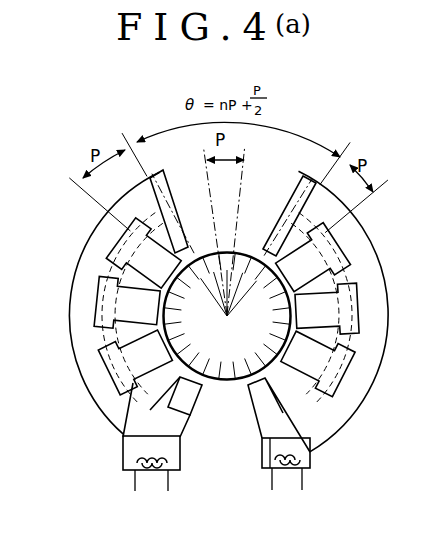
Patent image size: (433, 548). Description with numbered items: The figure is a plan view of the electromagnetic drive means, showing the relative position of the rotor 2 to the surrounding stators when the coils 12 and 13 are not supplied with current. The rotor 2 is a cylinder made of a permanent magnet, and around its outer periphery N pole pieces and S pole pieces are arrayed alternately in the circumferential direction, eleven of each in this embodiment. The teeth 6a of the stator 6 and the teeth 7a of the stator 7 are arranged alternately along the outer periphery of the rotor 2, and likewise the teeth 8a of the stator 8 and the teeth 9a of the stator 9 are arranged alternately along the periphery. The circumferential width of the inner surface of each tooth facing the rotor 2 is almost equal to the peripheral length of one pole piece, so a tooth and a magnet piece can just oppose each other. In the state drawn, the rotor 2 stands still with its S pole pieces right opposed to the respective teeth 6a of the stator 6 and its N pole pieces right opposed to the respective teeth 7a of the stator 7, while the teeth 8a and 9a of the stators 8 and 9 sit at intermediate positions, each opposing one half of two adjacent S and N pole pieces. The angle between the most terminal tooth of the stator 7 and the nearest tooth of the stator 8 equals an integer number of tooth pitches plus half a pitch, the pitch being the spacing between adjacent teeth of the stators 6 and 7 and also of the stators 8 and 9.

The rotor 2 is at (224, 380).
The stator 6 is at (97, 389).
The teeth of the stator 6 6a is at (180, 418).
The stator 7 is at (120, 408).
The teeth of the stator 7 7a is at (186, 232).
The stator 8 is at (327, 442).
The teeth of the stator 8 8a is at (312, 265).
The stator 9 is at (270, 455).
The teeth of the stator 9 9a is at (263, 405).
The coil 12 is at (135, 473).
The coil 13 is at (272, 474).